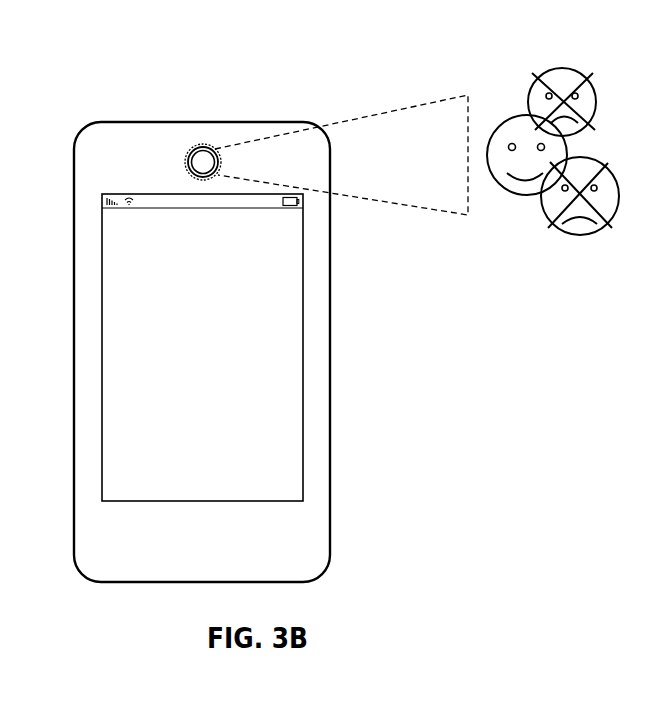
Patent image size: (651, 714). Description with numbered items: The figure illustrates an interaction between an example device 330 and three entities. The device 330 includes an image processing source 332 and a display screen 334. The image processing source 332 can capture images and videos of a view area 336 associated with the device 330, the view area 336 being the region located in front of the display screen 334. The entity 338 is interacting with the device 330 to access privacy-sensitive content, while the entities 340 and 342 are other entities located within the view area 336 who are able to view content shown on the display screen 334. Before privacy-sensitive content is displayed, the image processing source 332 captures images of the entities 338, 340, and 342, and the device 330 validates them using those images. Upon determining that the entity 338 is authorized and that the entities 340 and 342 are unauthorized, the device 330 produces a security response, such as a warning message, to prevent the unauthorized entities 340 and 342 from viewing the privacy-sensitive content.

The device 330 is at (135, 122).
The image processing source 332 is at (195, 146).
The display screen 334 is at (100, 246).
The view area 336 is at (395, 110).
The entity 338 is at (520, 112).
The entity 340 is at (560, 70).
The entity 342 is at (578, 237).